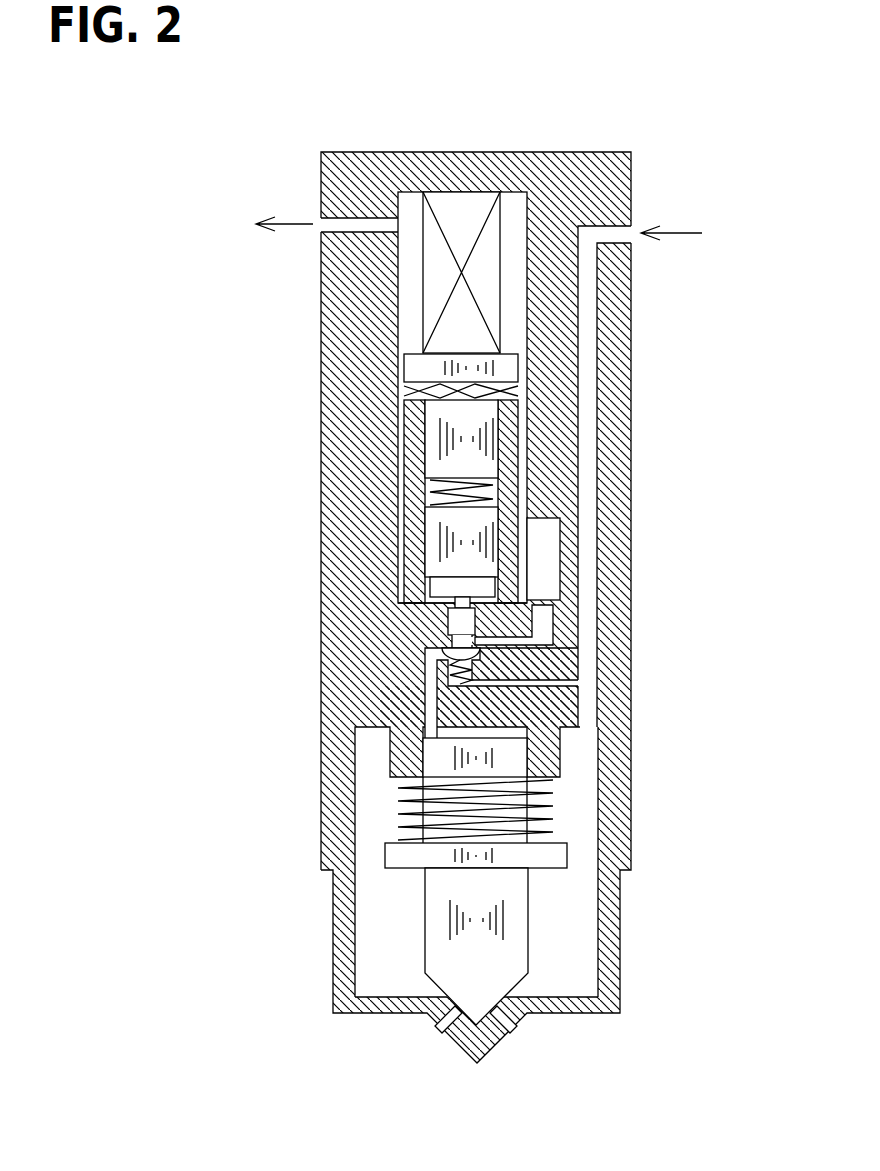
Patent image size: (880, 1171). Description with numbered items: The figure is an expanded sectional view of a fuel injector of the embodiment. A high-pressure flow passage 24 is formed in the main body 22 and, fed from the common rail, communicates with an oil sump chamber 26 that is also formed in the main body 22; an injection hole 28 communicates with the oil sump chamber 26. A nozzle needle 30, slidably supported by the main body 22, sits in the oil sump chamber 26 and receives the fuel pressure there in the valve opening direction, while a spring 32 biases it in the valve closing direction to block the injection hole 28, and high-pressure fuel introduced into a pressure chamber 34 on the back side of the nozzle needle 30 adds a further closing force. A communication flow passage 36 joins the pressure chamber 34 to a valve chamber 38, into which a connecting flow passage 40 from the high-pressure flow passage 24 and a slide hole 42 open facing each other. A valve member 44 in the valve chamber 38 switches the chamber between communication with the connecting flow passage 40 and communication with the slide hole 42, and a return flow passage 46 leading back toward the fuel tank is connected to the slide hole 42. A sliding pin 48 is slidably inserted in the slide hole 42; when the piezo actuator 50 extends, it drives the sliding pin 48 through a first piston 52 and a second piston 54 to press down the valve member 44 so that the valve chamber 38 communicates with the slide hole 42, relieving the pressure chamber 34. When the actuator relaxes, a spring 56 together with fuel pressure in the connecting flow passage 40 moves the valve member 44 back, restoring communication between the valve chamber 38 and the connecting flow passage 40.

The main body 22 is at (613, 408).
The high-pressure flow passage 24 is at (587, 358).
The oil sump chamber 26 is at (572, 922).
The injection hole 28 is at (500, 1028).
The nozzle needle 30 is at (438, 947).
The spring 32 is at (400, 798).
The pressure chamber 34 is at (410, 722).
The communication flow passage 36 is at (440, 688).
The valve chamber 38 is at (445, 652).
The connecting flow passage 40 is at (540, 675).
The slide hole 42 is at (455, 615).
The valve member 44 is at (455, 640).
The return flow passage 46 is at (540, 628).
The sliding pin 48 is at (580, 608).
The piezo actuator 50 is at (440, 291).
The first piston 52 is at (435, 440).
The second piston 54 is at (430, 523).
The spring 56 is at (582, 662).